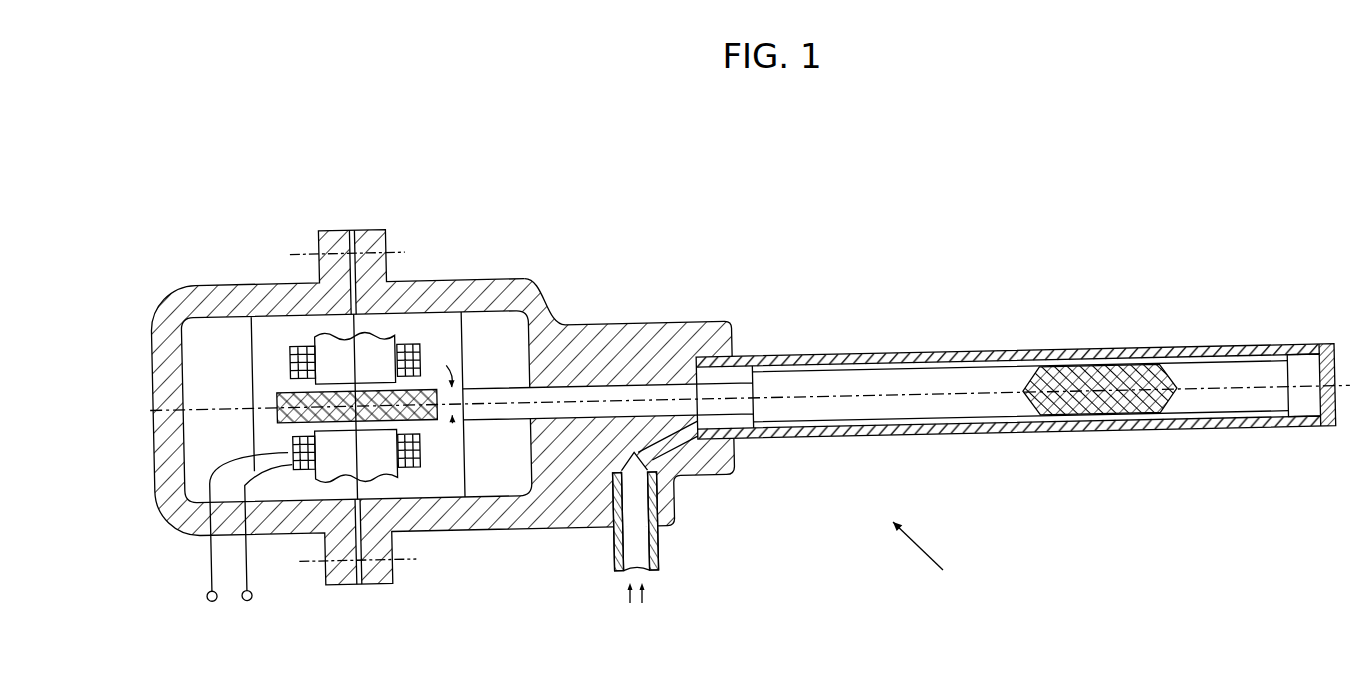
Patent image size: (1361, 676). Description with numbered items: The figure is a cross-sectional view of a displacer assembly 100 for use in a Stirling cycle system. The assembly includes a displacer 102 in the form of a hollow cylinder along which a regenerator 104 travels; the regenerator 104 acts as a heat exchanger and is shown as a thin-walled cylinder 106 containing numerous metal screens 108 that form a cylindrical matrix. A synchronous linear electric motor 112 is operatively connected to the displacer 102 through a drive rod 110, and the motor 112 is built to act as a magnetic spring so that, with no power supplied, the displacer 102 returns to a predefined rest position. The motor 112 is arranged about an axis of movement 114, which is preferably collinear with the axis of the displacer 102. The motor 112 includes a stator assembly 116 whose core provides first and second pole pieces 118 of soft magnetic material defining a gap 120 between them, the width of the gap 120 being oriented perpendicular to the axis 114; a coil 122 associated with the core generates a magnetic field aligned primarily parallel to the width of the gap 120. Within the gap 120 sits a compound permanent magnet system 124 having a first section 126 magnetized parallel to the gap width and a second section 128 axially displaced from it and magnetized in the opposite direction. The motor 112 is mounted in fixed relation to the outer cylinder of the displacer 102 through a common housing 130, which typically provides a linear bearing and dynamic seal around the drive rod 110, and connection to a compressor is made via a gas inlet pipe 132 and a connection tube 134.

The displacer assembly 100 is at (939, 562).
The displacer 102 is at (803, 357).
The regenerator 104 is at (977, 382).
The thin-walled cylinder 106 is at (903, 355).
The metal screens 108 is at (1090, 352).
The drive rod 110 is at (560, 387).
The synchronous linear electric motor 112 is at (224, 375).
The axis of movement 114 is at (152, 410).
The stator assembly 116 is at (324, 352).
The pole pieces 118 is at (331, 340).
The gap 120 is at (287, 430).
The coil 122 is at (413, 347).
The compound permanent magnet system 124 is at (266, 400).
The first section 126 is at (276, 396).
The second section 128 is at (439, 345).
The common housing 130 is at (633, 340).
The gas inlet pipe 132 is at (613, 543).
The connection tube 134 is at (673, 442).